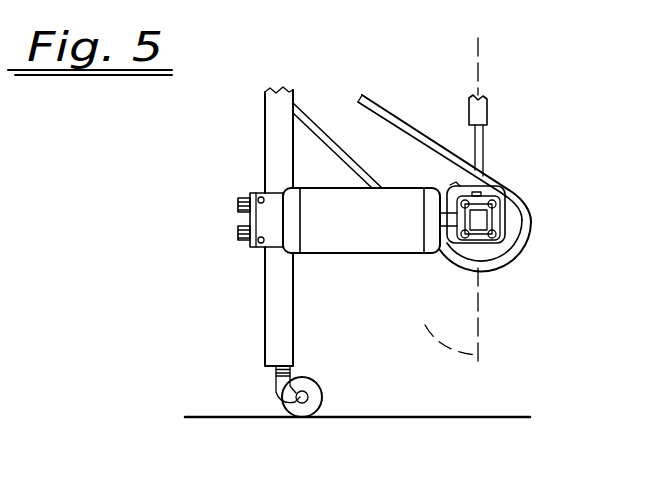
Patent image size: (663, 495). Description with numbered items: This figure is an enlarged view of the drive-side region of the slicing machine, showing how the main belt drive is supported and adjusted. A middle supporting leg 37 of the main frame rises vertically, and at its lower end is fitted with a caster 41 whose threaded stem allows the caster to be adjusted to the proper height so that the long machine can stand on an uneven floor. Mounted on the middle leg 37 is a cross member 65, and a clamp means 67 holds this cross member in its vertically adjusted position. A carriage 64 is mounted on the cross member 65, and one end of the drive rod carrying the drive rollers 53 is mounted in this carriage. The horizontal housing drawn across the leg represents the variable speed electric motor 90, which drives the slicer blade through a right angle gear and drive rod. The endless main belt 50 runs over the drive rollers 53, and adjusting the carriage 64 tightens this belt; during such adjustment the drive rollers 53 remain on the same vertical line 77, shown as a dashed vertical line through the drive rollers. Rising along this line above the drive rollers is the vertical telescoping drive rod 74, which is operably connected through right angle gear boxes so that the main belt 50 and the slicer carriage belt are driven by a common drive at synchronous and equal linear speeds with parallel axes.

The middle legs 37 is at (263, 300).
The casters 41 is at (276, 370).
The endless main belt 50 is at (407, 99).
The drive rollers 53 is at (490, 258).
The carriage 64 is at (372, 262).
The cross member 65 is at (238, 214).
The clamp means 67 is at (238, 228).
The vertical telescoping drive rod 74 is at (500, 124).
The vertical line 77 is at (443, 203).
The variable speed electric motor 90 is at (396, 192).